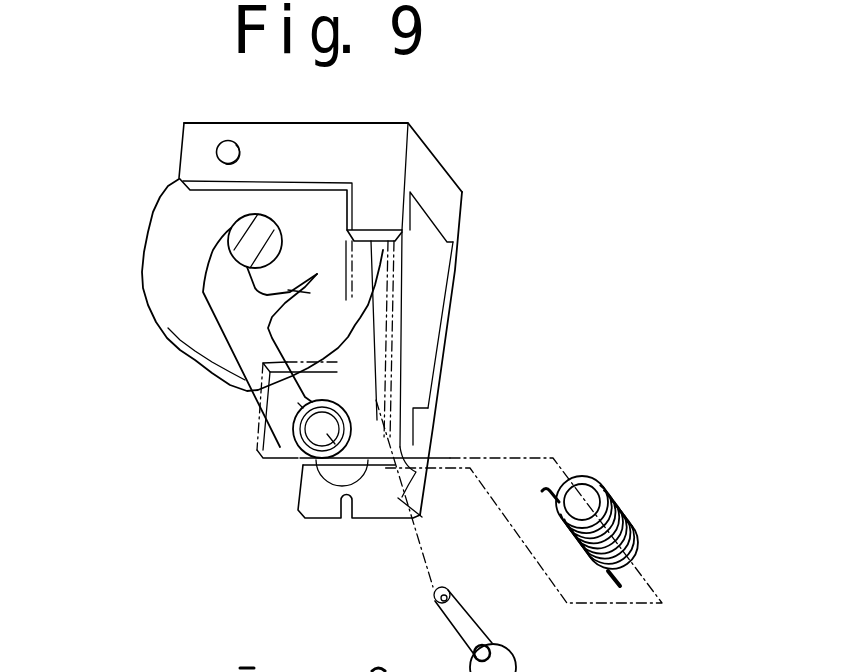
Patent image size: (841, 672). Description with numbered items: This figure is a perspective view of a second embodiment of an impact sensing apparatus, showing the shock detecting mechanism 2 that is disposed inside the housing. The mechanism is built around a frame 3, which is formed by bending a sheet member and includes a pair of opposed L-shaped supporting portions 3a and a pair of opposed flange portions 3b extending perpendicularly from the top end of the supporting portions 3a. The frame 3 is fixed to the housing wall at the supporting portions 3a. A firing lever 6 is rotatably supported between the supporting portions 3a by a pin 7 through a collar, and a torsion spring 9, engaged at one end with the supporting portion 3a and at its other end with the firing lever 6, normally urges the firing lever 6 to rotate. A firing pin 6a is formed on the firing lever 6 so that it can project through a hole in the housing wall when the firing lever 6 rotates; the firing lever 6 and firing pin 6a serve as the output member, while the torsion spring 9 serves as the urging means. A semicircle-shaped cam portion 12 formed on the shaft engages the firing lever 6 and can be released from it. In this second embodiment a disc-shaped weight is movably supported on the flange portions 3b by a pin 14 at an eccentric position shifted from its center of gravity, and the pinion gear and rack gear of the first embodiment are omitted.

The shock detecting mechanism 2 is at (172, 357).
The frame 3 is at (466, 213).
The L-shaped supporting member 3a is at (430, 400).
The flange portion 3b is at (350, 153).
The firing lever 6 is at (225, 303).
The firing pin 6a is at (305, 293).
The pin 7 is at (545, 671).
The torsion spring 9 is at (627, 518).
The cam portion 12 is at (250, 237).
The pin 14 is at (218, 150).